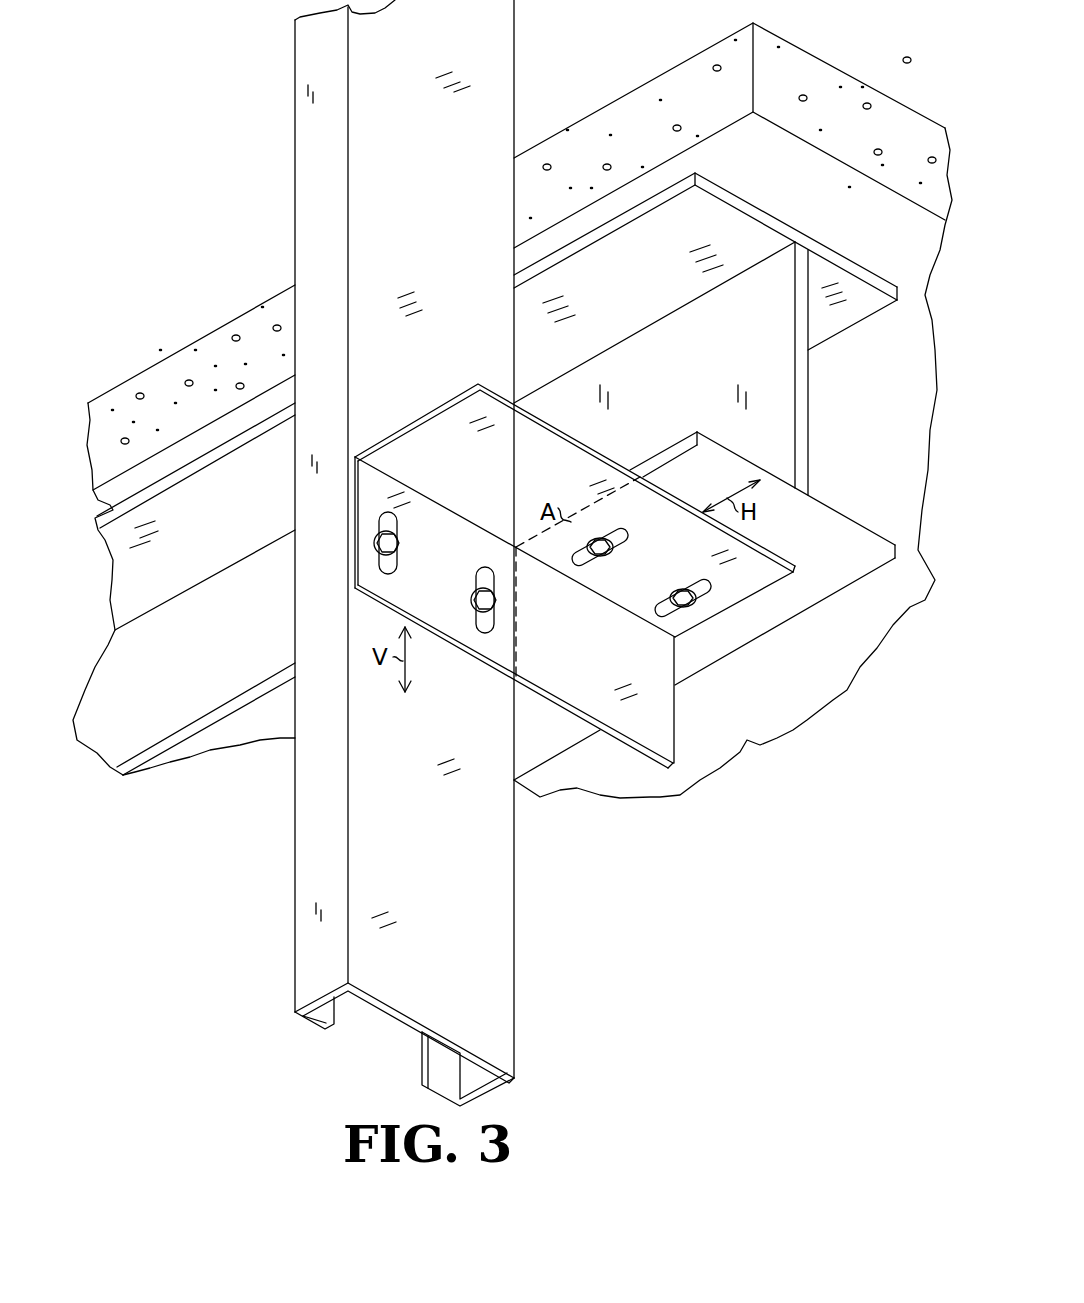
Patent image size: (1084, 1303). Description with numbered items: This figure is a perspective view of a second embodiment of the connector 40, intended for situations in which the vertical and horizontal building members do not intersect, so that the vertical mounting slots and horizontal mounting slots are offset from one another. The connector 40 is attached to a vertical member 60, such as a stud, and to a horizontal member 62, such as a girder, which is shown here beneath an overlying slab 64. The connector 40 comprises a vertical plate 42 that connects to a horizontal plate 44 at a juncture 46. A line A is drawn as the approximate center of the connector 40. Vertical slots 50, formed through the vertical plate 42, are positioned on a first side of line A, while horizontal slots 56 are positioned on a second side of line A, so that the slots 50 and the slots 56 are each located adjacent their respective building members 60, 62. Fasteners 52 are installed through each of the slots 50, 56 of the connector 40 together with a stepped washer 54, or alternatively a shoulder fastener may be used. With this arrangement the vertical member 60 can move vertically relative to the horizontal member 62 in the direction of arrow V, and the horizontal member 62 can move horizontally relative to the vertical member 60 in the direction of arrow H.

The connector 40 is at (575, 576).
The vertical plate 42 is at (608, 672).
The horizontal plate 44 is at (575, 532).
The juncture 46 is at (425, 493).
The vertical slots 50 is at (478, 631).
The fasteners 52 is at (497, 597).
The washer nut 54 is at (474, 596).
The horizontal slots 56 is at (628, 545).
The vertical member 60 is at (503, 878).
The horizontal member 62 is at (826, 587).
The concrete slab 64 is at (802, 62).